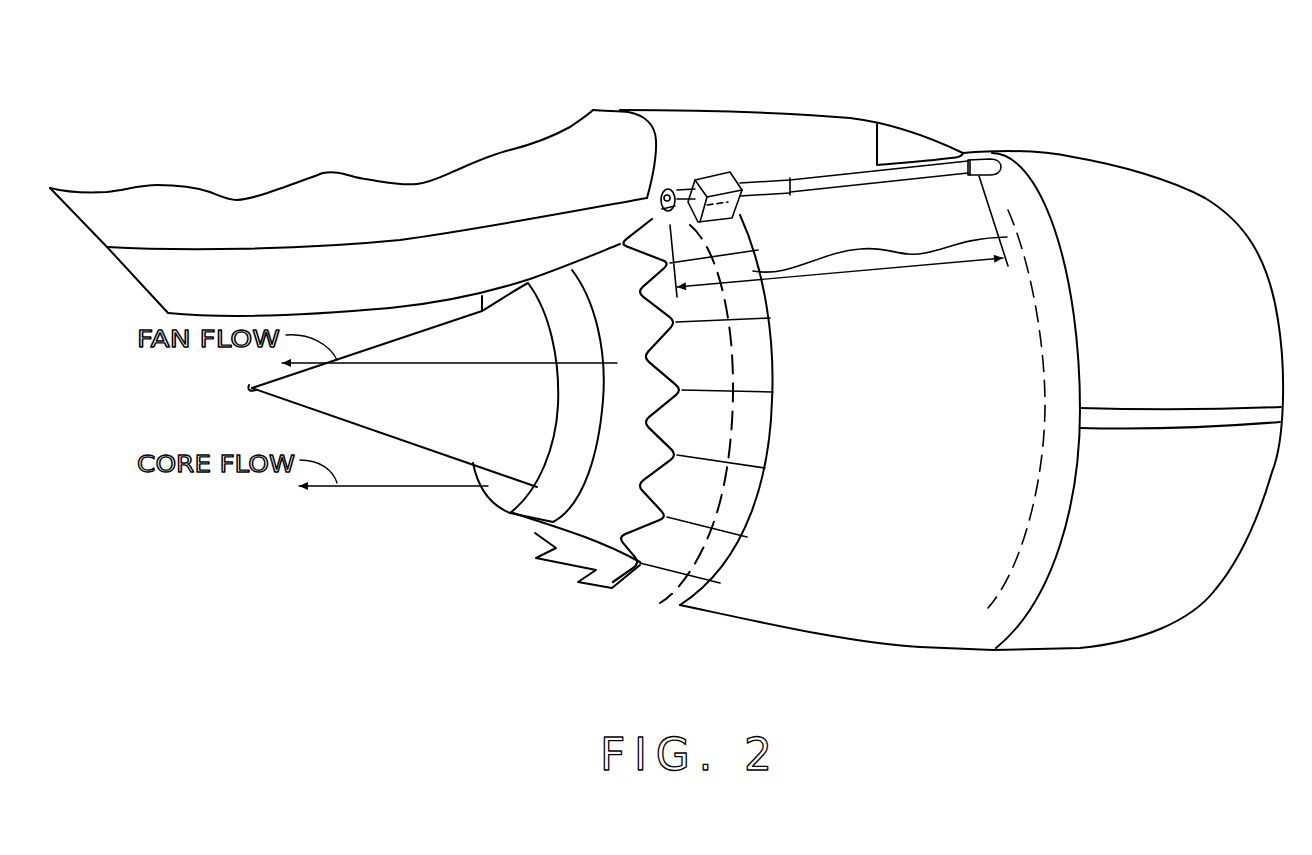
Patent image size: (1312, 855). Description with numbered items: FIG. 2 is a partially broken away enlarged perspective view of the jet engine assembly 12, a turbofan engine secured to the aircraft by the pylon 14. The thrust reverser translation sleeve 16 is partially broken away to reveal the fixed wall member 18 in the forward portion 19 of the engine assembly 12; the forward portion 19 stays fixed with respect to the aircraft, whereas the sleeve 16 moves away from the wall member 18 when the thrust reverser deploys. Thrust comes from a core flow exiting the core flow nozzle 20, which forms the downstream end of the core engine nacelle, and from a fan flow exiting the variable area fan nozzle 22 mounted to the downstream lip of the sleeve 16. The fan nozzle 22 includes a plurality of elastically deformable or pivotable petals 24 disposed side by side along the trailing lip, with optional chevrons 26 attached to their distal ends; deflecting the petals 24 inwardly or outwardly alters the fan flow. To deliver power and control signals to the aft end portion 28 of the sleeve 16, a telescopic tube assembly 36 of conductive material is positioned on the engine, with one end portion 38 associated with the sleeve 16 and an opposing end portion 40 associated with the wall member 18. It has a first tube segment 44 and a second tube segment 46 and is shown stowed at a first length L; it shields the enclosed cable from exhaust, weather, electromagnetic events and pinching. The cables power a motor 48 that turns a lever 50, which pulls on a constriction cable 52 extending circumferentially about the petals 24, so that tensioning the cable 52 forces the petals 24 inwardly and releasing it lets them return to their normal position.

The jet engine assembly 12 is at (1033, 85).
The pylon 14 is at (700, 127).
The thrust reverser translation sleeve 16 is at (952, 353).
The wall member 18 is at (1027, 210).
The forward portion 19 is at (1137, 598).
The core flow nozzle 20 is at (547, 497).
The variable area fan nozzle 22 is at (635, 595).
The petals 24 is at (702, 310).
The chevrons 26 is at (648, 295).
The aft end portion 28 is at (773, 623).
The telescopic tube assembly 36 is at (794, 161).
The end portion 38 is at (752, 214).
The opposing end portion 40 is at (1015, 178).
The first tube segment 44 is at (903, 178).
The second tube segment 46 is at (757, 183).
The motor 48 is at (695, 177).
The lever 50 is at (672, 185).
The constriction cable 52 is at (733, 382).